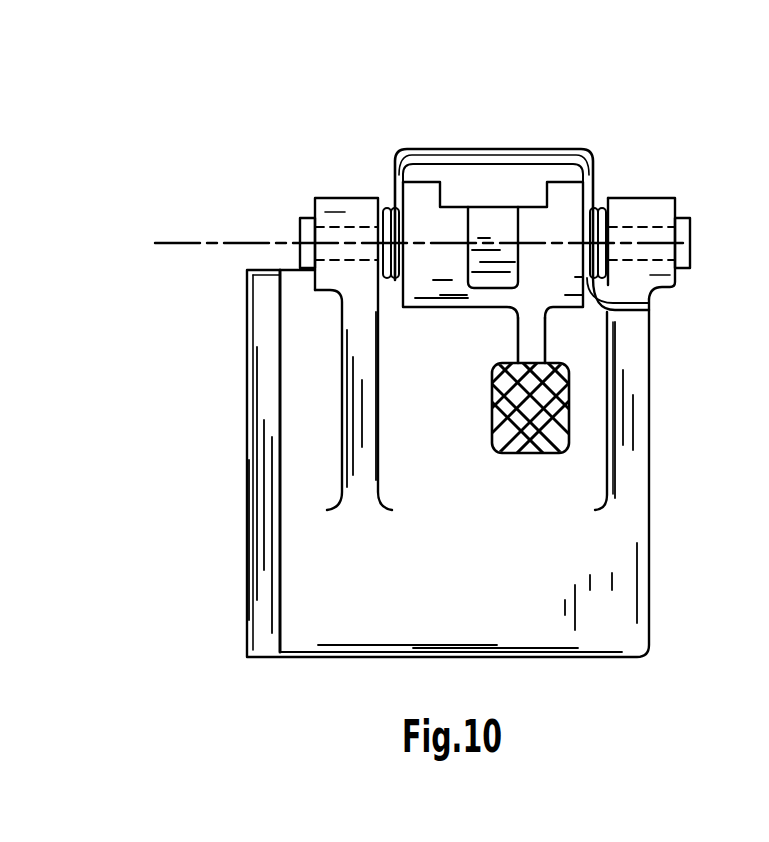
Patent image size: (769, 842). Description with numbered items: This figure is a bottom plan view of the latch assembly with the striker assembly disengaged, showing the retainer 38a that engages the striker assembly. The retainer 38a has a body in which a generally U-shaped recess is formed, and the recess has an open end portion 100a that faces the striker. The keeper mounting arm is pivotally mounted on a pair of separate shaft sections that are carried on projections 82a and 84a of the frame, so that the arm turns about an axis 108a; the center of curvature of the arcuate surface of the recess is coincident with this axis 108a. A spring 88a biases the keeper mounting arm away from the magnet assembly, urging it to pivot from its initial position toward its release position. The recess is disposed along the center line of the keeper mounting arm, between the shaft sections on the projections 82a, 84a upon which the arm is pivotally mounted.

The retainer 38a is at (434, 210).
The projection 82a is at (327, 206).
The projection 84a is at (654, 202).
The spring 88a is at (536, 162).
The open end portion 100a is at (483, 206).
The axis 108a is at (198, 246).